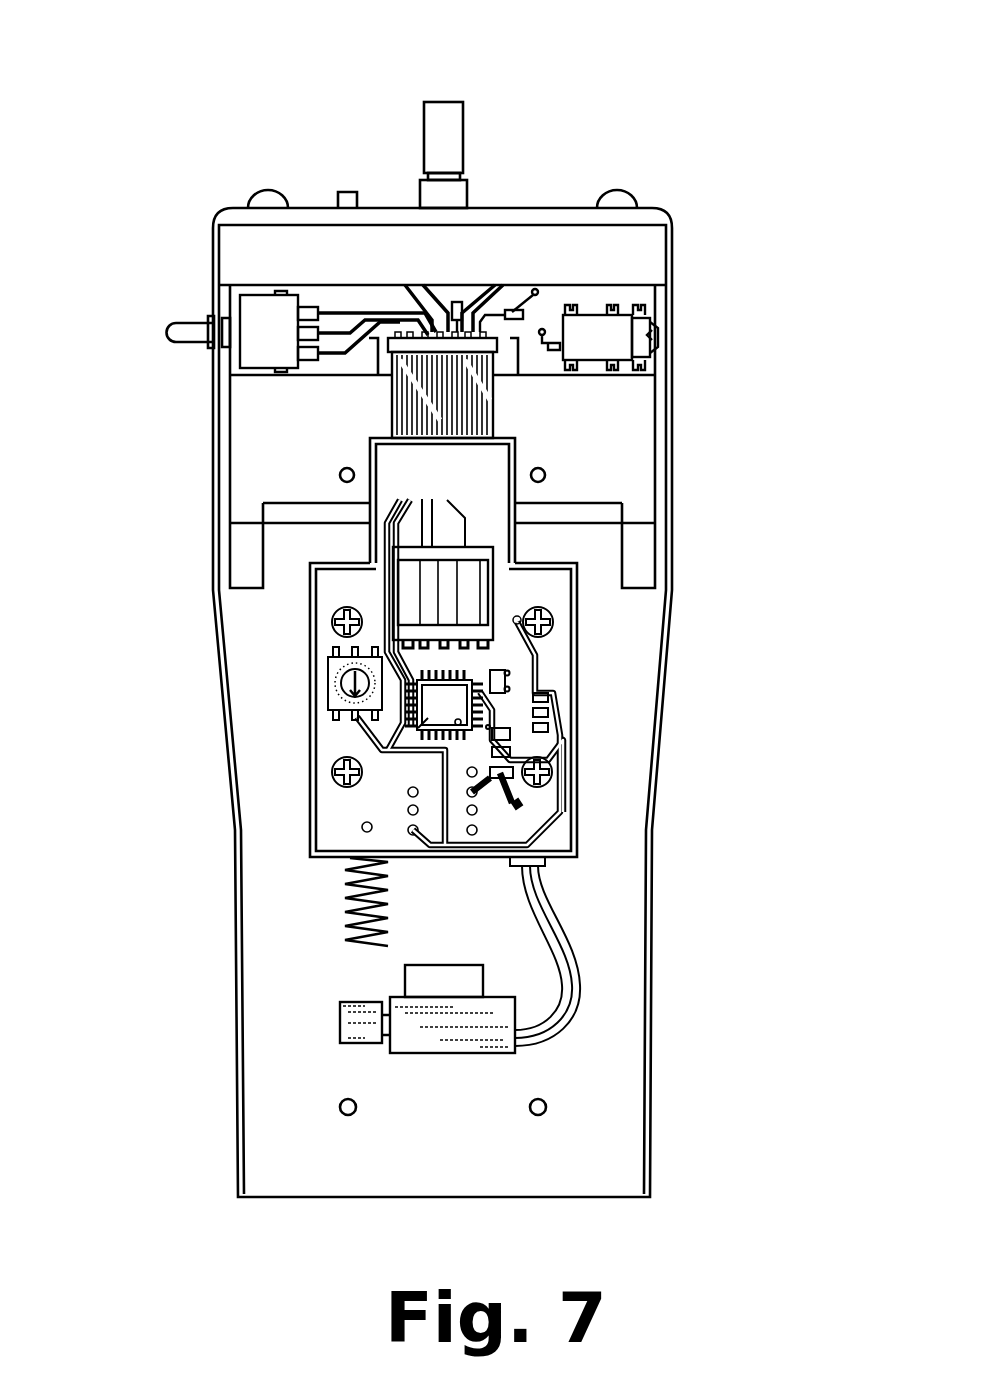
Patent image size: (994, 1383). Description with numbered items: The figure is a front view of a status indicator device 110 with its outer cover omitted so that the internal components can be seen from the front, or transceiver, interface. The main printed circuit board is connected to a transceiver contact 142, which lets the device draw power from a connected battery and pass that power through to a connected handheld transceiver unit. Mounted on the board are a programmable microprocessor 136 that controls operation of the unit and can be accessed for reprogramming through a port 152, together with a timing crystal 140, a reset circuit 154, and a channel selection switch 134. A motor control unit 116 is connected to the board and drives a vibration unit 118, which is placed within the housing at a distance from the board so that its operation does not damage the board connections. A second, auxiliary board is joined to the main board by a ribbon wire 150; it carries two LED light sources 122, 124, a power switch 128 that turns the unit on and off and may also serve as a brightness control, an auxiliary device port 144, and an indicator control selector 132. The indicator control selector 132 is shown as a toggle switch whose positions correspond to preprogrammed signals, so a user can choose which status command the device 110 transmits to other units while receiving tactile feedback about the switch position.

The status indicator device 110 is at (740, 85).
The motor control unit 116 is at (567, 815).
The vibration unit 118 is at (432, 1042).
The light source 122 is at (620, 188).
The light source 124 is at (267, 190).
The power switch 128 is at (458, 120).
The indicator control selector 132 is at (168, 323).
The channel selection switch 134 is at (328, 690).
The programmable microprocessor 136 is at (358, 762).
The timing crystal 140 is at (497, 678).
The transceiver contact 142 is at (475, 587).
The auxiliary device port 144 is at (653, 333).
The ribbon wire 150 is at (398, 405).
The port 152 is at (413, 830).
The reset circuit 154 is at (556, 707).